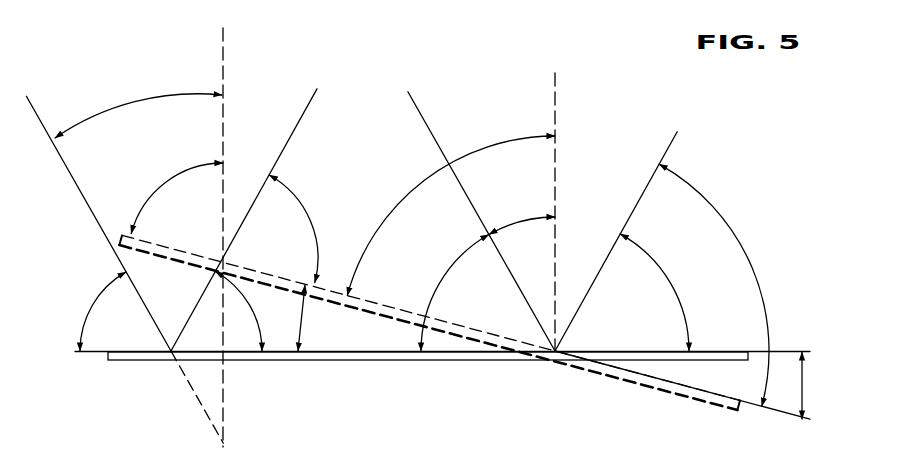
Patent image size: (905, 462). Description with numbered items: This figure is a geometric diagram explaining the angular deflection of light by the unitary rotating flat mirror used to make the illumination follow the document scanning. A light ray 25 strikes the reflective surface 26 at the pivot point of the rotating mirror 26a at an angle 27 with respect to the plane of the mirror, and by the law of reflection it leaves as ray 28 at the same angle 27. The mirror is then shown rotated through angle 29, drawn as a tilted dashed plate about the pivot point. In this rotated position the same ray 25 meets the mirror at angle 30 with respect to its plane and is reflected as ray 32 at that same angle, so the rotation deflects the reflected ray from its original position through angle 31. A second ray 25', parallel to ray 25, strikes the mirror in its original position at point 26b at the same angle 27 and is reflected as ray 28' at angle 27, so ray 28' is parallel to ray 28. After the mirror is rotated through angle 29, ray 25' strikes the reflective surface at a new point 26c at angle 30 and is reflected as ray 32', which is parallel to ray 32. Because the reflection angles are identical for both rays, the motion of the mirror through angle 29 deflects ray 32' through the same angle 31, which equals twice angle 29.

The light ray 25 is at (616, 229).
The light ray 25' is at (244, 205).
The reflective surface 26 is at (588, 352).
The pivot point of rotating mirror 26a is at (553, 356).
The point 26b is at (168, 356).
The new point 26c is at (221, 254).
The angle 27 is at (384, 292).
The ray 28 is at (481, 212).
The ray 28' is at (124, 255).
The angle 29 is at (550, 352).
The angle 30 is at (450, 271).
The angle 31 is at (305, 164).
The ray 32 is at (573, 208).
The ray 32' is at (205, 236).